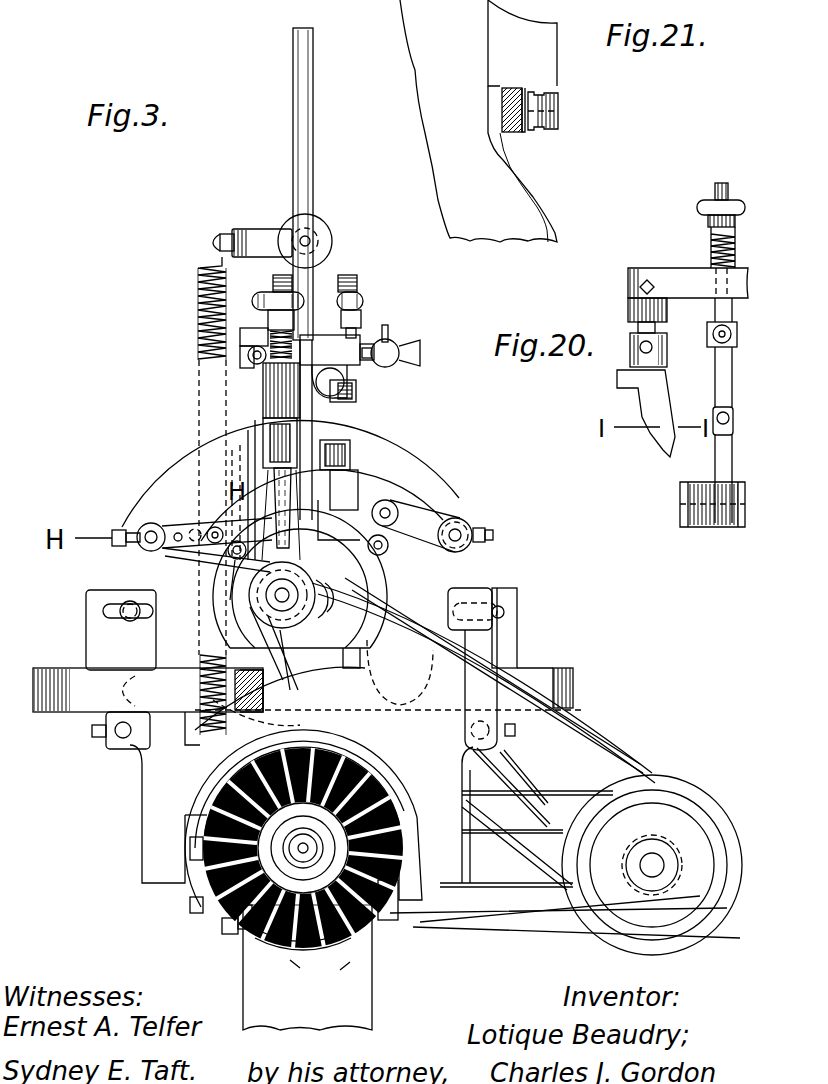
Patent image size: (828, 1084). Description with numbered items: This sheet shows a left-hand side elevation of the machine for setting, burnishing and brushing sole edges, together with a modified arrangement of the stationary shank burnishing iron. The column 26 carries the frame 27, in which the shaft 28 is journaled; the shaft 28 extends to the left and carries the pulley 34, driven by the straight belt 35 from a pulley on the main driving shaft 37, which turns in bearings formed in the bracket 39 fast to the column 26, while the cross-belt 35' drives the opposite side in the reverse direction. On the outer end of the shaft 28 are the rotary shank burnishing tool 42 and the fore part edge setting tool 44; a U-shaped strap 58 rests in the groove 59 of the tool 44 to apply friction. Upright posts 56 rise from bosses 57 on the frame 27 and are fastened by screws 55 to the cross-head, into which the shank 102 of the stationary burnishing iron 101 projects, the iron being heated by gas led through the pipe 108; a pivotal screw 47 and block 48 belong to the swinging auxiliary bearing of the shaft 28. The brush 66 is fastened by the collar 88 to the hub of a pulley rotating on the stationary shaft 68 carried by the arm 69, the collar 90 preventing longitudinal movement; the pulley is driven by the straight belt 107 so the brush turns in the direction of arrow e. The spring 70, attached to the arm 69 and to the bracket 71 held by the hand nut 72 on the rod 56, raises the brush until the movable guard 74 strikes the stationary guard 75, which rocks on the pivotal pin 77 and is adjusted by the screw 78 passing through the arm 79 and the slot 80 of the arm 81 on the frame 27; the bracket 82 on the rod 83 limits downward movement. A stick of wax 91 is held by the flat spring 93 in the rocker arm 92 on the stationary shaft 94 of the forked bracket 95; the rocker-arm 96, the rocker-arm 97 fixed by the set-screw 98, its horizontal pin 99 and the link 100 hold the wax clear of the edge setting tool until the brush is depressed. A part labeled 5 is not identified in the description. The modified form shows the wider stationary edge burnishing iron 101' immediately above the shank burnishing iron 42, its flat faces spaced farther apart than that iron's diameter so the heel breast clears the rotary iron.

In FIG. 3, the upright post 56 is at (320, 137).
In FIG. 3, the bracket 71 is at (258, 240).
In FIG. 3, the hand nut 72 is at (332, 245).
In FIG. 3, the spring 70 is at (199, 298).
In FIG. 3, the body 5 is at (316, 372).
In FIG. 3, the screw 55 is at (345, 393).
In FIG. 3, the pipe 108 is at (247, 352).
In FIG. 3, the shank 102 is at (262, 412).
In FIG. 3, the stationary burnishing iron 101 is at (226, 417).
In FIG. 3, the stick of wax 91 is at (272, 478).
In FIG. 3, the rocker arm 92 is at (212, 498).
In FIG. 3, the rocker-arm 96 is at (208, 528).
In FIG. 3, the forked bracket 95 is at (162, 488).
In FIG. 3, the boss 57 is at (330, 462).
In FIG. 3, the strap 58 is at (387, 490).
In FIG. 3, the block 48 is at (420, 500).
In FIG. 3, the pivotal screw 47 is at (417, 523).
In FIG. 3, the rotary shank burnishing tool 42 is at (303, 583).
In FIG. 21, the rotary shank burnishing tool 42 is at (542, 111).
In FIG. 20, the rotary shank burnishing tool 42 is at (680, 497).
In FIG. 3, the fore part edge setting tool 44 is at (298, 628).
In FIG. 3, the stationary shaft 94 is at (140, 538).
In FIG. 3, the rocker-arm 97 is at (240, 533).
In FIG. 3, the set-screw 98 is at (130, 530).
In FIG. 3, the horizontal pin 99 is at (228, 550).
In FIG. 3, the flat spring 93 is at (237, 570).
In FIG. 3, the link 100 is at (255, 590).
In FIG. 3, the groove 59 is at (175, 640).
In FIG. 3, the pulley 34 is at (200, 673).
In FIG. 3, the shaft 28 is at (262, 628).
In FIG. 3, the frame 27 is at (587, 687).
In FIG. 3, the stationary guard 75 is at (200, 767).
In FIG. 3, the collar 90 is at (190, 853).
In FIG. 3, the collar 88 is at (217, 870).
In FIG. 3, the bracket 82 is at (203, 920).
In FIG. 3, the brush 66 is at (225, 930).
In FIG. 3, the rod 83 is at (244, 936).
In FIG. 3, the stationary shaft 68 is at (277, 948).
In FIG. 3, the column 26 is at (353, 1008).
In FIG. 3, the arm 79 is at (480, 633).
In FIG. 3, the slot 80 is at (494, 608).
In FIG. 3, the arm 81 is at (508, 655).
In FIG. 3, the screw 78 is at (483, 593).
In FIG. 3, the pivotal pin 77 is at (470, 735).
In FIG. 3, the straight belt 35 is at (484, 683).
In FIG. 3, the cross-belt 35' is at (503, 734).
In FIG. 3, the arm 69 is at (517, 875).
In FIG. 3, the bracket 39 is at (430, 927).
In FIG. 3, the straight belt 107 is at (580, 933).
In FIG. 3, the guard 74 is at (383, 933).
In FIG. 3, the main driving shaft 37 is at (659, 863).
In FIG. 21, the stationary edge burnishing iron 101' is at (536, 131).
In FIG. 20, the stationary edge burnishing iron 101' is at (608, 413).